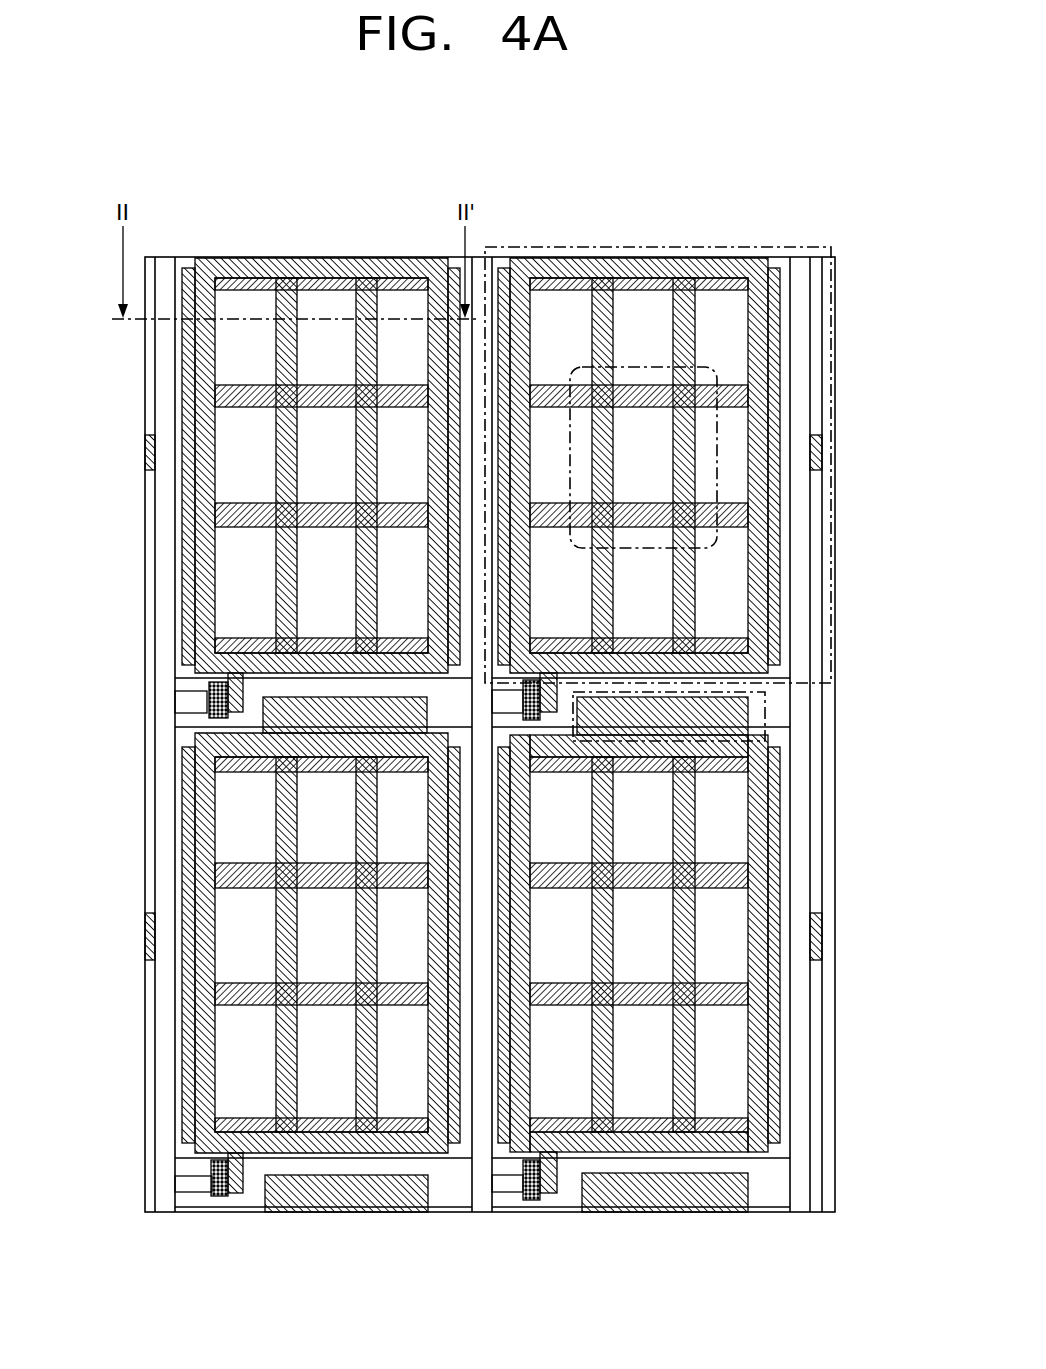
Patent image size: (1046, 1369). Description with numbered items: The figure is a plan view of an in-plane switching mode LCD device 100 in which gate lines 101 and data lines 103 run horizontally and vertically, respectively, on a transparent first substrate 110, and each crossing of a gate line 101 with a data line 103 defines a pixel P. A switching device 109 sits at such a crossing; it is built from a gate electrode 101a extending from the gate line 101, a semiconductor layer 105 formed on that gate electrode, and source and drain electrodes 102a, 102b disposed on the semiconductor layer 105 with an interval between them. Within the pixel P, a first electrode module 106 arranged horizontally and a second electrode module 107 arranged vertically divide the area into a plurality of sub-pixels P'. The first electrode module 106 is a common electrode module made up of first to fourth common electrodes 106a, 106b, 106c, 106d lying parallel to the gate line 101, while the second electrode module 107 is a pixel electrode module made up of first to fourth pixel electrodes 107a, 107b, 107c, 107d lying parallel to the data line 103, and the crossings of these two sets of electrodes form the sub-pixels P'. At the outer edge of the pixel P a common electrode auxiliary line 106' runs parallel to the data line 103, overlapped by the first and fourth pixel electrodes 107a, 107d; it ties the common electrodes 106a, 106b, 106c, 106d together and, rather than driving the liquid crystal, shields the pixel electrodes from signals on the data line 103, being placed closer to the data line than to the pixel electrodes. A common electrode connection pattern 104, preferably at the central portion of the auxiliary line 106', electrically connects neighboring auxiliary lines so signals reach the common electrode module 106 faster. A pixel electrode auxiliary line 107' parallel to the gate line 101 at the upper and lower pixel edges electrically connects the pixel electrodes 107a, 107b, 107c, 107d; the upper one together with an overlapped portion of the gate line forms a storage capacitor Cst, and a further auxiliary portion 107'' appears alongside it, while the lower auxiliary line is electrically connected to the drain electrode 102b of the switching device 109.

The in-plane switching mode LCD device 100 is at (152, 205).
The gate line 101 is at (835, 1182).
The gate electrode 101a is at (233, 1205).
The source electrode 102a is at (205, 1178).
The drain electrode 102b is at (247, 1197).
The data line 103 is at (474, 1215).
The common electrode connection pattern 104 is at (835, 452).
The semiconductor layer 105 is at (217, 1200).
The first electrode module 106 is at (742, 944).
The first common electrode 106a is at (745, 762).
The second common electrode 106b is at (735, 874).
The third common electrode 106c is at (740, 992).
The fourth common electrode 106d is at (745, 1126).
The common electrode auxiliary line 106' is at (689, 1011).
The second electrode module 107 is at (650, 1025).
The first pixel electrode 107a is at (545, 1197).
The second pixel electrode 107b is at (603, 1153).
The third pixel electrode 107c is at (687, 1153).
The fourth pixel electrode 107d is at (762, 1153).
The pixel electrode auxiliary line 107' is at (702, 465).
The storage electrode portion 107'' is at (737, 725).
The switching device 109 is at (185, 1156).
The transparent first substrate 110 is at (145, 531).
The storage capacitor Cst is at (775, 710).
The pixel P is at (658, 434).
The sub-pixel P' is at (650, 427).